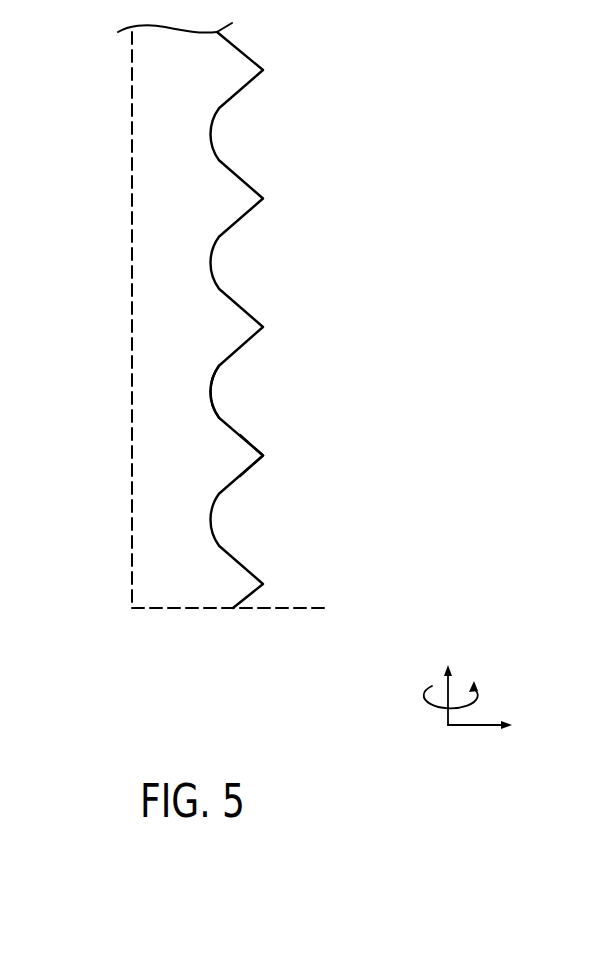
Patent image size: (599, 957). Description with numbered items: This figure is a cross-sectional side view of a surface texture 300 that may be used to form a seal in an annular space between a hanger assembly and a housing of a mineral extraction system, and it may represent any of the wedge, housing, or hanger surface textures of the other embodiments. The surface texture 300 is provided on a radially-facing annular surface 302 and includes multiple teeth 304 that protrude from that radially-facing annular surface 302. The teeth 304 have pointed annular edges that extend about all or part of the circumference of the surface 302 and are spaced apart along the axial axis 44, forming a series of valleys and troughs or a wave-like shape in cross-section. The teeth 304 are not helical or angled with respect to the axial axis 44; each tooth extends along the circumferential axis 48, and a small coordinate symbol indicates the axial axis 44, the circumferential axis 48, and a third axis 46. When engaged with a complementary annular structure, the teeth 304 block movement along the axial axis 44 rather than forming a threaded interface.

The surface texture 300 is at (300, 259).
The radially-facing annular surface 302 is at (203, 393).
The teeth 304 is at (263, 457).
The axial axis 44 is at (447, 688).
The horizontal axis 46 is at (473, 725).
The circumferential axis 48 is at (432, 712).